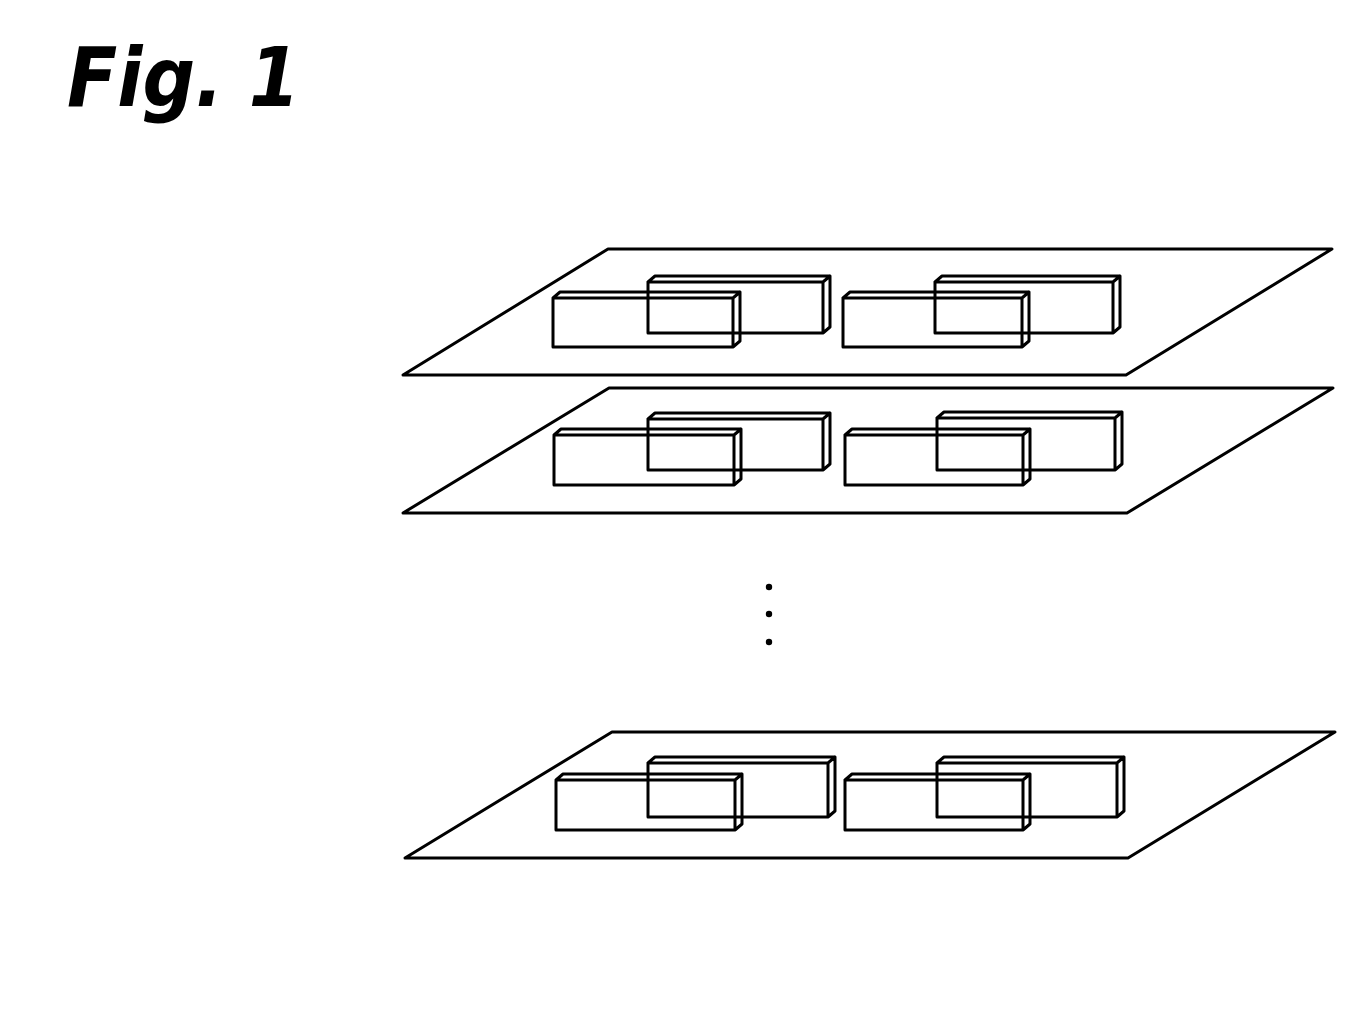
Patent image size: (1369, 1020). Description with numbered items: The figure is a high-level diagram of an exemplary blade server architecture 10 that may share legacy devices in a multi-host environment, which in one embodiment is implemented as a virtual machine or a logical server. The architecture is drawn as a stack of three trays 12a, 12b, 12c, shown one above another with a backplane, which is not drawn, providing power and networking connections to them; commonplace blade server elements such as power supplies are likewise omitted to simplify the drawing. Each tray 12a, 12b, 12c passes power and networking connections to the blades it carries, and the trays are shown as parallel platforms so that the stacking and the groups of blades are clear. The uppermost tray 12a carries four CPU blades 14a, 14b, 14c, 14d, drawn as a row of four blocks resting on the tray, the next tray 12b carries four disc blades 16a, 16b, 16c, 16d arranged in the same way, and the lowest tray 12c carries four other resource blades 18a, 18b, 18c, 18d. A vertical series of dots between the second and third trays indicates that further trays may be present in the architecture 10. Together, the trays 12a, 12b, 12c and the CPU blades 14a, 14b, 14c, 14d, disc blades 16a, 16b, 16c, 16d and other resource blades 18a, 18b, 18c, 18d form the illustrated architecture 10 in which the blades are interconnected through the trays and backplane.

The blade server architecture 10 is at (1251, 181).
The tray 12a is at (490, 317).
The tray 12b is at (492, 455).
The tray 12c is at (514, 790).
The CPU blade 14a is at (670, 341).
The CPU blade 14b is at (802, 321).
The CPU blade 14c is at (960, 339).
The CPU blade 14d is at (1093, 319).
The disc blade 16a is at (677, 470).
The disc blade 16b is at (797, 461).
The disc blade 16c is at (960, 470).
The disc blade 16d is at (1100, 460).
The other resource blade 18a is at (677, 820).
The other resource blade 18b is at (803, 806).
The other resource blade 18c is at (957, 814).
The other resource blade 18d is at (1090, 804).